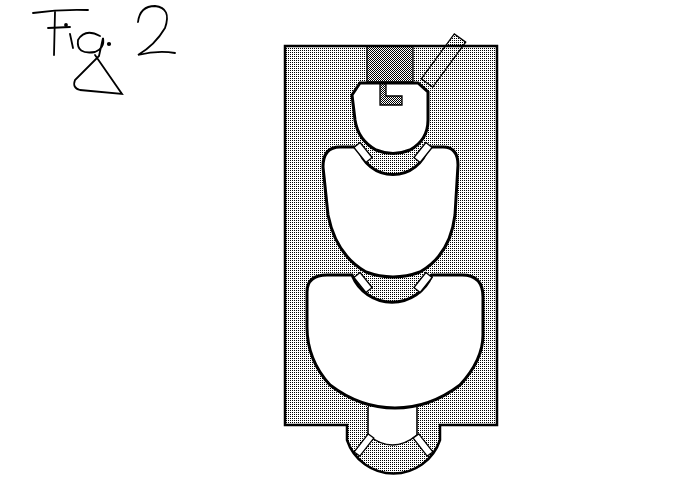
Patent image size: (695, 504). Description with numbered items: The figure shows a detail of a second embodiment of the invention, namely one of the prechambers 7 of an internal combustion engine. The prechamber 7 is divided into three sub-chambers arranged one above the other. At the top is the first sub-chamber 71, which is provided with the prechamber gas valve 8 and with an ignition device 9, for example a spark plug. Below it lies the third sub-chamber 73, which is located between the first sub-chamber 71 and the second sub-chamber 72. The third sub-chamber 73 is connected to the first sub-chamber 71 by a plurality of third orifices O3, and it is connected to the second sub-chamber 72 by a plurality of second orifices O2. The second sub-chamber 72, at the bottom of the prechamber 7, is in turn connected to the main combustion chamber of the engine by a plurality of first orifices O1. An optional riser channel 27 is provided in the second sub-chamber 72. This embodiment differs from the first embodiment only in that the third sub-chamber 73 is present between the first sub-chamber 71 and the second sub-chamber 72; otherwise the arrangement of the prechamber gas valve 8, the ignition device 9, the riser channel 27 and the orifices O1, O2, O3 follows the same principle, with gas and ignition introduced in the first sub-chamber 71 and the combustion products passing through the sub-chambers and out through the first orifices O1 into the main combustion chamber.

The prechamber 7 is at (522, 203).
The prechamber gas valve 8 is at (466, 50).
The ignition device 9 is at (368, 73).
The first sub-chamber 71 is at (387, 120).
The second sub-chamber 72 is at (382, 342).
The third sub-chamber 73 is at (380, 198).
The riser channel 27 is at (397, 423).
The first orifices O1 is at (354, 447).
The second orifices O2 is at (350, 282).
The third orifices O3 is at (360, 153).